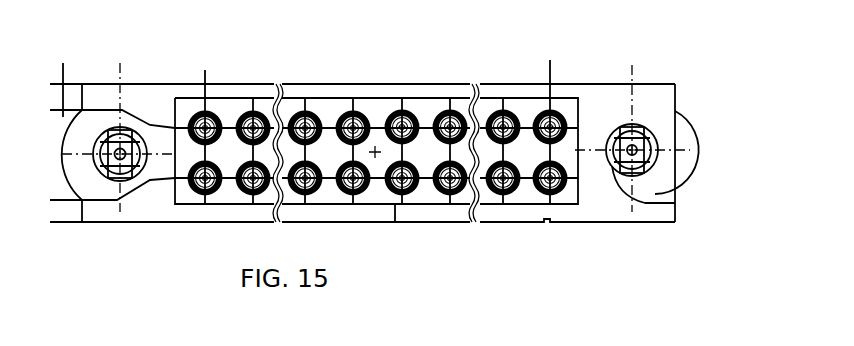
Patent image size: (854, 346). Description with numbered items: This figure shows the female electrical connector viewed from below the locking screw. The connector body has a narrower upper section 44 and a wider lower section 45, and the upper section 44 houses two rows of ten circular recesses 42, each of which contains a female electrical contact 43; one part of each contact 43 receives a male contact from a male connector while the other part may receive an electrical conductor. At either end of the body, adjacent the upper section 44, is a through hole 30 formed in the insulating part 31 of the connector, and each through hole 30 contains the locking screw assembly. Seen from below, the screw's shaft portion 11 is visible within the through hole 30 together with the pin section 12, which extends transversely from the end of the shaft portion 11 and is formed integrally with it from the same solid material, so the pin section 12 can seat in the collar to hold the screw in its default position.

The shaft portion 11 is at (152, 126).
The pin section 12 is at (117, 127).
The through hole 30 is at (683, 185).
The insulating part 31 is at (650, 222).
The recess 42 is at (562, 110).
The female electrical contact 43 is at (210, 112).
The upper section 44 is at (427, 107).
The lower section 45 is at (357, 84).